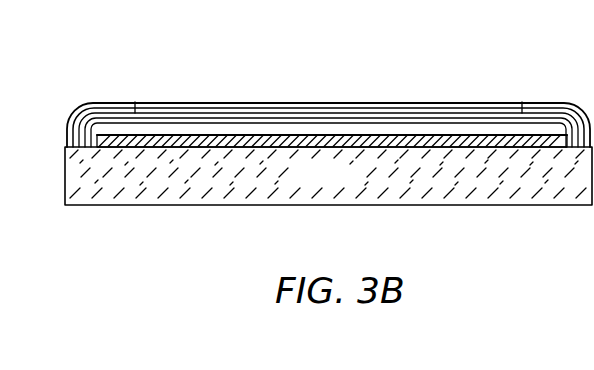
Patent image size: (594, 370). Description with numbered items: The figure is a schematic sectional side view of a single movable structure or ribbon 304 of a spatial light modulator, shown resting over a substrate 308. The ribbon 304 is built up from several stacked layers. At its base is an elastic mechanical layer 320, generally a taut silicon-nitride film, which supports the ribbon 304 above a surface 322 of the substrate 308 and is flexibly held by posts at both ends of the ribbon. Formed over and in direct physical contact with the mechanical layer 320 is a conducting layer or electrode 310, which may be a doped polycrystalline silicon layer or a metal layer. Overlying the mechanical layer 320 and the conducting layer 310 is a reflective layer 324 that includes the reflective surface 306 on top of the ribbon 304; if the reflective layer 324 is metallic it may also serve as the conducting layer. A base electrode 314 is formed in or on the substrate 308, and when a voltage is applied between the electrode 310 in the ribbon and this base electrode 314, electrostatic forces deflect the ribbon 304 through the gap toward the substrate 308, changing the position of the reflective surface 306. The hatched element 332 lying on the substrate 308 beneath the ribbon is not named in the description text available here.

The ribbon 304 is at (106, 50).
The reflective surface 306 is at (366, 98).
The substrate 308 is at (343, 186).
The conducting layer or electrode 310 is at (497, 110).
The base electrode 314 is at (180, 135).
The elastic mechanical layer 320 is at (445, 113).
The surface of the substrate 322 is at (78, 141).
The reflective layer 324 is at (547, 105).
The thin film layer 332 is at (272, 131).